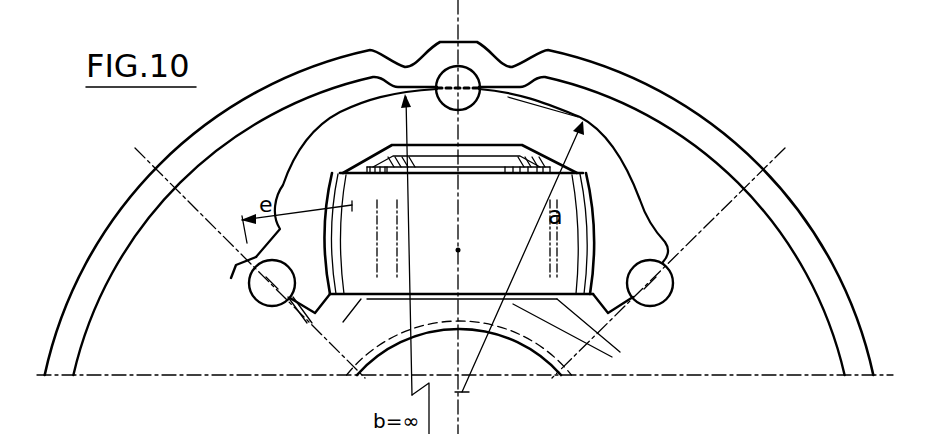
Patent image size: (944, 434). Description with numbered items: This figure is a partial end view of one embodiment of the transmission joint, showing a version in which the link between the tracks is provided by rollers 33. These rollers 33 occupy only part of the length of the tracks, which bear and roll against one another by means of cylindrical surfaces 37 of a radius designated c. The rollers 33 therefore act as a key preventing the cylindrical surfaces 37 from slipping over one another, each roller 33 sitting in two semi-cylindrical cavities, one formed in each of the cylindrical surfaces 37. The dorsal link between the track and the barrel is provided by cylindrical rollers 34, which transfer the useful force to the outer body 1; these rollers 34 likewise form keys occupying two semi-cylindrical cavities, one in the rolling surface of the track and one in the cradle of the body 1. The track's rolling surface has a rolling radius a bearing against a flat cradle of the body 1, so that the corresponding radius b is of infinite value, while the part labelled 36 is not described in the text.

The cylindrical body 1 is at (789, 200).
The rollers 33 is at (255, 292).
The cylindrical rollers 34 is at (477, 72).
The elastic band 36 is at (510, 101).
The cylindrical surfaces 37 is at (303, 322).